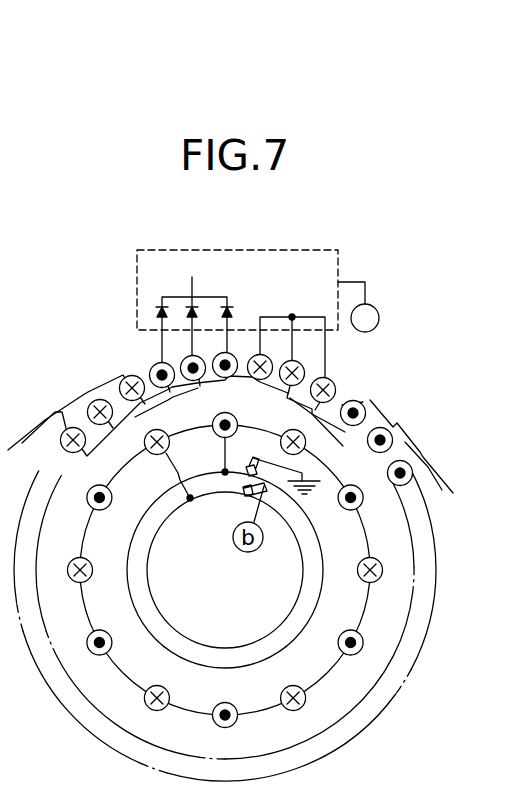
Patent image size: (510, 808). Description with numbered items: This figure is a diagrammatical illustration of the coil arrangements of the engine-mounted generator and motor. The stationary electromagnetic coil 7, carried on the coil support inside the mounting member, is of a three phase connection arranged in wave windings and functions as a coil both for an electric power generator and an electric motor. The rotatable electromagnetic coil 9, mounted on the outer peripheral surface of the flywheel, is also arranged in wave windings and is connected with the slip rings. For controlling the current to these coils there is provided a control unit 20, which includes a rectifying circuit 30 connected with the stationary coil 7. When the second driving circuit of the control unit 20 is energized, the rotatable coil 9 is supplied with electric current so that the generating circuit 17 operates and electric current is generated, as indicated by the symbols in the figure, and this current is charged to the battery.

The stationary electromagnetic coil 7 is at (153, 365).
The rotatable electromagnetic coil 9 is at (359, 640).
The generating circuit 17 is at (380, 394).
The control unit 20 is at (312, 250).
The rectifying circuit 30 is at (158, 297).